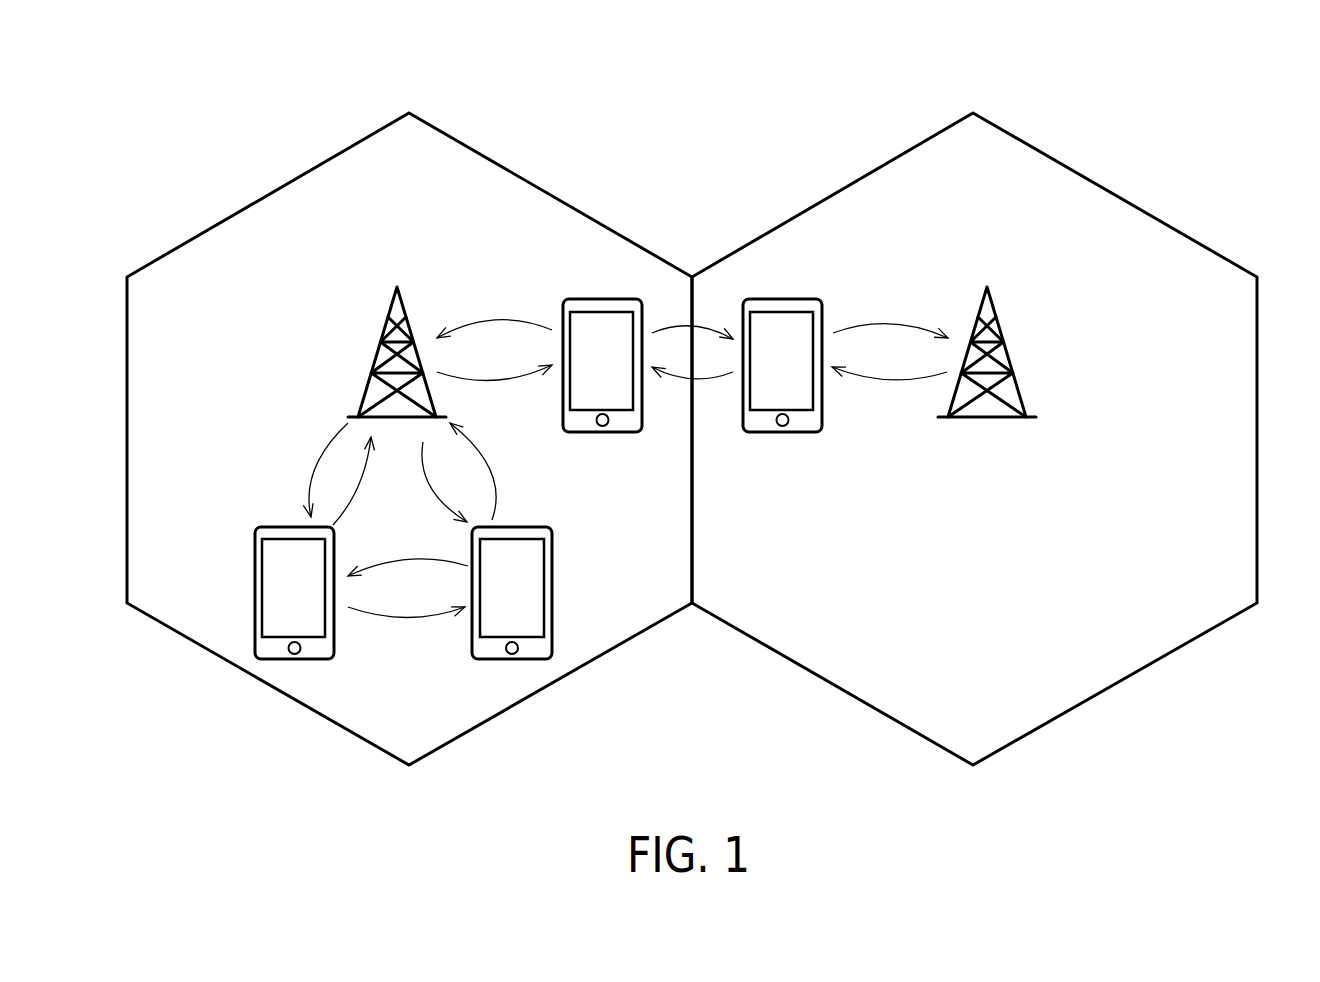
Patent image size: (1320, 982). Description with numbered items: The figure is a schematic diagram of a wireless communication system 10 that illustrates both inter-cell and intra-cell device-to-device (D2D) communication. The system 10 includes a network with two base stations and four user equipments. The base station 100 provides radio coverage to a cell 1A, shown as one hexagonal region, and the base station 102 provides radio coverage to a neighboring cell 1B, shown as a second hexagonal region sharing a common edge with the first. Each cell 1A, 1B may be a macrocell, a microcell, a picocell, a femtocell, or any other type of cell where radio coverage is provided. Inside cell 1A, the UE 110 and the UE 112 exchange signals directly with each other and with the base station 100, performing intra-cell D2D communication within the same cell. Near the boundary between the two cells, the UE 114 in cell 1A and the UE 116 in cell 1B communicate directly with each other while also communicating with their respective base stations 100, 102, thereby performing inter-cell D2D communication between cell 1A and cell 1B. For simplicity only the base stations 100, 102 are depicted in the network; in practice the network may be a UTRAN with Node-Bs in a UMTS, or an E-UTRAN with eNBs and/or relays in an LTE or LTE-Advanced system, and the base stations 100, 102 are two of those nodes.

The wireless communication system 10 is at (710, 410).
The cell 1A is at (533, 184).
The cell 1B is at (848, 184).
The base station 100 is at (378, 343).
The base station 102 is at (1010, 342).
The user equipment 110 is at (253, 550).
The user equipment 112 is at (553, 580).
The user equipment 114 is at (625, 433).
The user equipment 116 is at (797, 433).